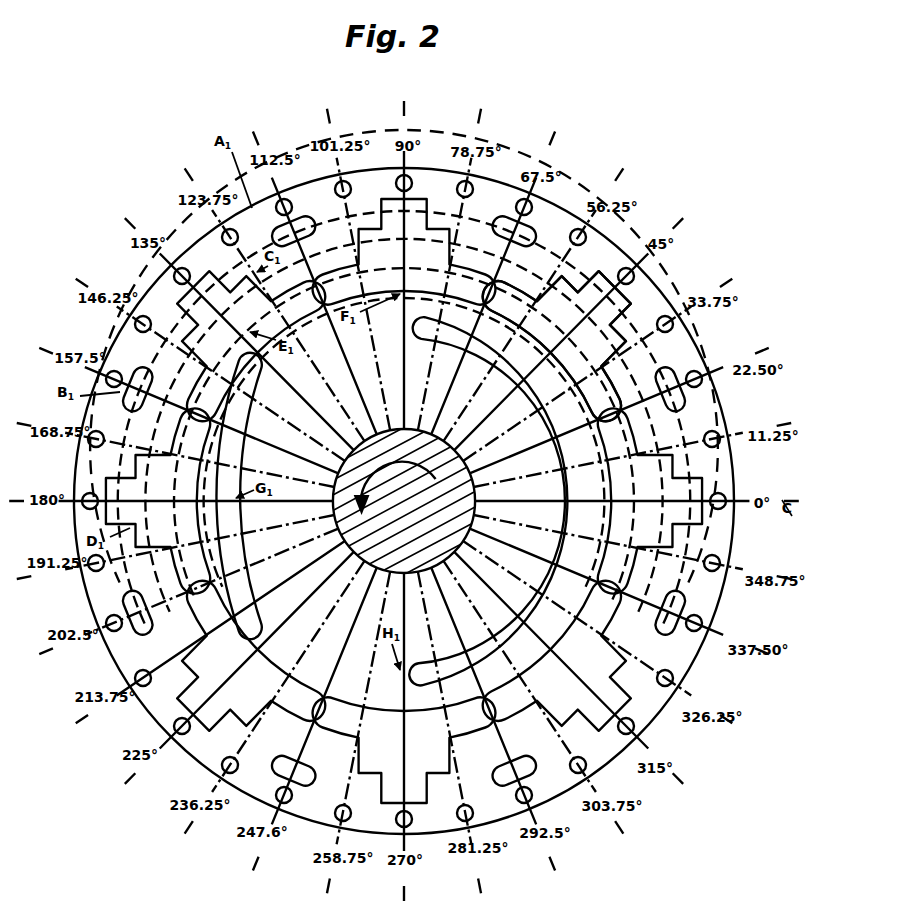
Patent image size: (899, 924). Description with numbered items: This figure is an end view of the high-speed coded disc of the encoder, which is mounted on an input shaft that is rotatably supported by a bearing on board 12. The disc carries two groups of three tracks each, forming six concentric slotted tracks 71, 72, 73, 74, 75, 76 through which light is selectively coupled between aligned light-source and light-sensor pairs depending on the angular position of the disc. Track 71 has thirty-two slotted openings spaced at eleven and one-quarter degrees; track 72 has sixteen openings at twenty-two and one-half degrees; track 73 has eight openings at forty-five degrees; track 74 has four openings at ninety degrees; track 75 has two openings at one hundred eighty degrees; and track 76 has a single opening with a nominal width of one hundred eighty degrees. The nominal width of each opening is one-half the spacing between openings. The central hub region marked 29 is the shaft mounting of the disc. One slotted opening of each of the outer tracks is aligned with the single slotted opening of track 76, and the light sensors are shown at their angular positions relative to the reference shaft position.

The board 12 is at (650, 730).
The central shaft 29 is at (404, 501).
The track 71 is at (368, 188).
The track 72 is at (500, 208).
The track 73 is at (592, 280).
The track 74 is at (619, 350).
The track 75 is at (622, 422).
The track 76 is at (690, 466).